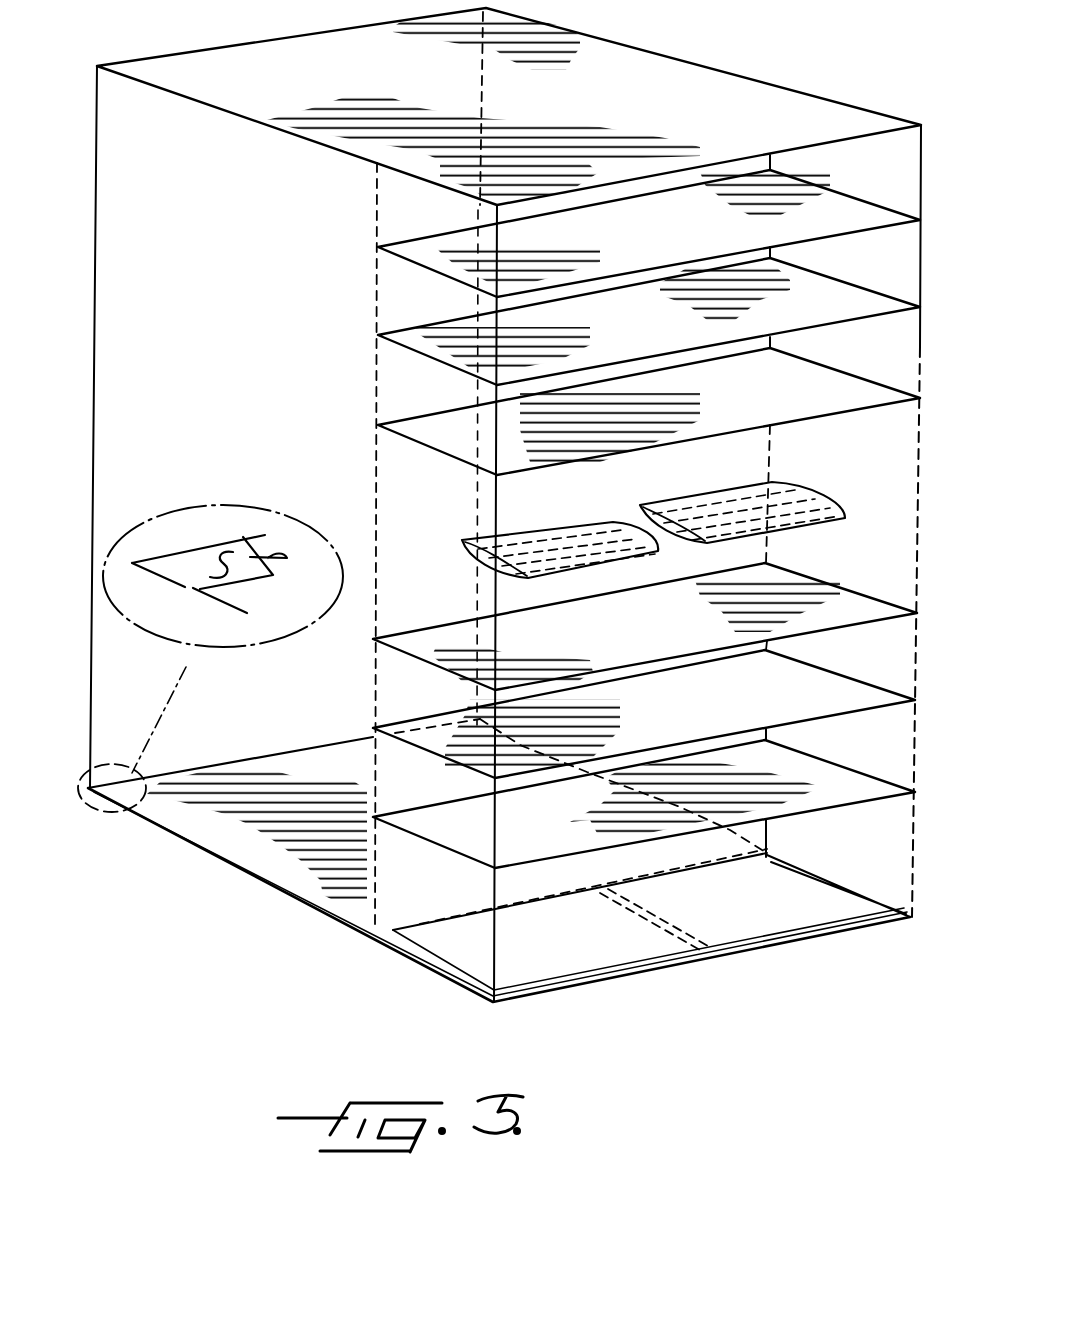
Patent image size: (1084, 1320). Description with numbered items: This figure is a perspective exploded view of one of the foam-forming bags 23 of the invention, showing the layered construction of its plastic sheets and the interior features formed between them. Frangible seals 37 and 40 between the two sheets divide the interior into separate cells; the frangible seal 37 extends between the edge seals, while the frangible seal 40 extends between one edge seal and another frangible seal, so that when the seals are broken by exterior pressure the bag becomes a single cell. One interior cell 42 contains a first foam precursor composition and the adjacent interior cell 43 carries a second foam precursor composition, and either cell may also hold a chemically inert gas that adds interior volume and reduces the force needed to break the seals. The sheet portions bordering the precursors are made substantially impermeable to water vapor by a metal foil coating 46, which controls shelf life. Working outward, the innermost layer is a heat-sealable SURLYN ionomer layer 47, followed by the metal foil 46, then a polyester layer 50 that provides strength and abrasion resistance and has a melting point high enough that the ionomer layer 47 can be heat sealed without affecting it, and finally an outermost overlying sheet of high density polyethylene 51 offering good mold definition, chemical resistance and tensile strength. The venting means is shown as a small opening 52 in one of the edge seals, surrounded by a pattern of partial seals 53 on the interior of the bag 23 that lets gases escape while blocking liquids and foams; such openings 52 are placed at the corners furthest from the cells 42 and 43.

The bag 23 is at (786, 48).
The frangible seal 37 is at (636, 888).
The frangible seal 40 is at (660, 920).
The interior cell 42 is at (735, 498).
The interior cell 43 is at (597, 522).
The metal foil coating 46 is at (800, 315).
The SURLYN ionomer layer 47 is at (778, 393).
The polyester layer 50 is at (690, 243).
The high density polyethylene sheet 51 is at (765, 130).
The opening 52 is at (158, 590).
The pattern of partial seals 53 is at (252, 598).